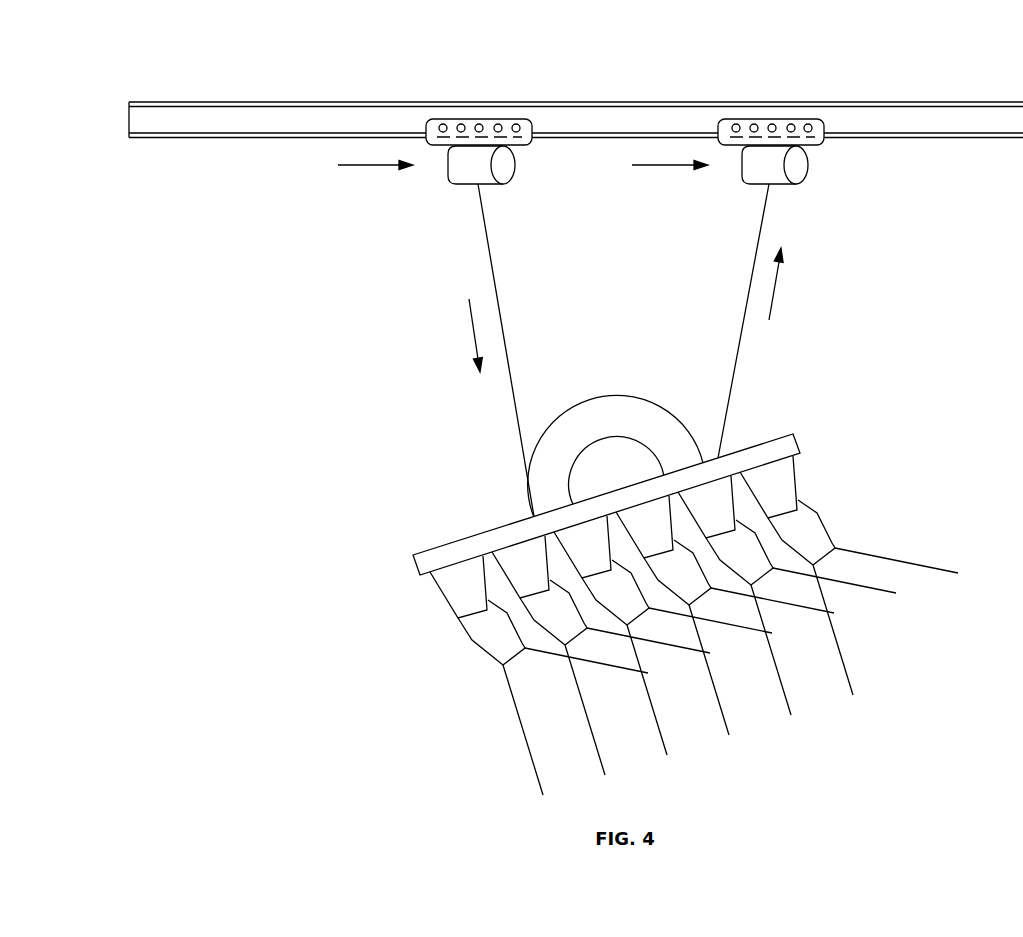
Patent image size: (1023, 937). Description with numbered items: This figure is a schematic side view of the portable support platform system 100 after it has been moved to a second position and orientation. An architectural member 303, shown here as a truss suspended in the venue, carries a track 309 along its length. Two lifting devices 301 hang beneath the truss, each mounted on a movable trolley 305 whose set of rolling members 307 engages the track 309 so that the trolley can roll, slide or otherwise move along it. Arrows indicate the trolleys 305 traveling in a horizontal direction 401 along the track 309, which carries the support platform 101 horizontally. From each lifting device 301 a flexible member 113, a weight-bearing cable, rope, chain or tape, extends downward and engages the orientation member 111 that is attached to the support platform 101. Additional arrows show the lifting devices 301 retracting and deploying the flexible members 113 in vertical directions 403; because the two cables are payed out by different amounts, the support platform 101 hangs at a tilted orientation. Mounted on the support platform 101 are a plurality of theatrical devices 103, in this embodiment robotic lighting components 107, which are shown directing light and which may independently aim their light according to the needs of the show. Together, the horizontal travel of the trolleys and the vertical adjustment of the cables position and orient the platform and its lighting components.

The portable support platform system 100 is at (576, 420).
The support platform 101 is at (792, 443).
The theatrical devices 103 is at (711, 588).
The robotic lighting component 107 is at (810, 522).
The orientation member 111 is at (638, 406).
The flexible member 113 is at (507, 352).
The lifting device 301 is at (507, 165).
The architectural member 303 is at (576, 126).
The movable trolley 305 is at (636, 95).
The rolling members 307 is at (808, 122).
The track 309 is at (925, 127).
The horizontal direction 401 is at (375, 167).
The vertical directions 403 is at (470, 322).